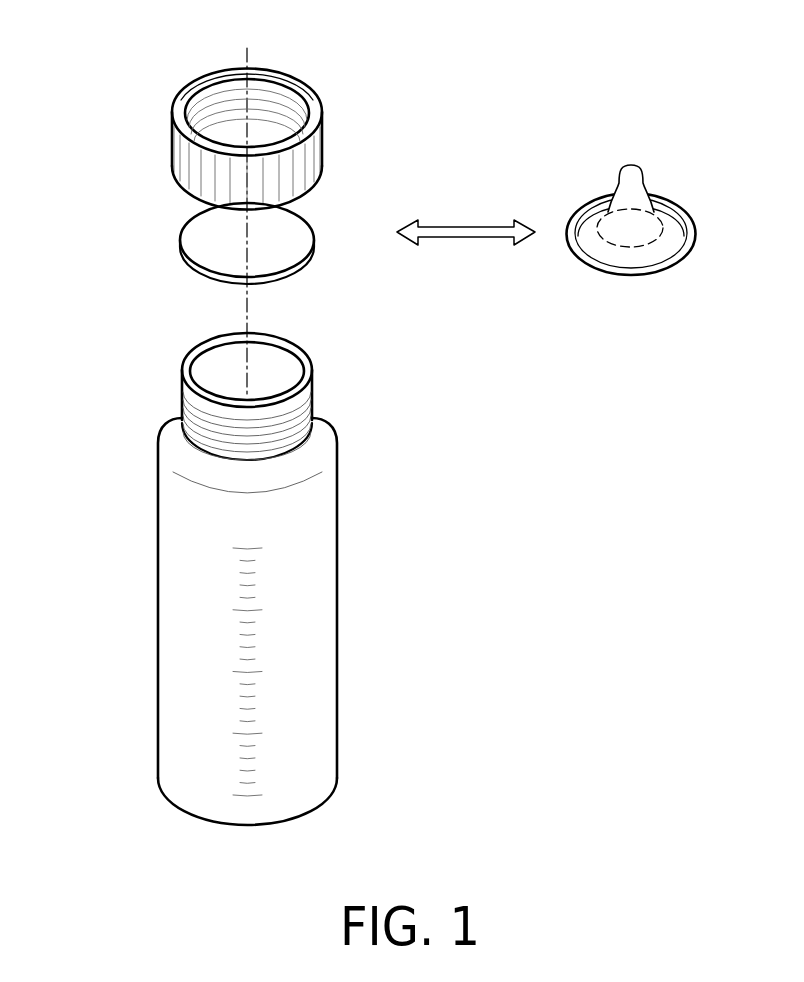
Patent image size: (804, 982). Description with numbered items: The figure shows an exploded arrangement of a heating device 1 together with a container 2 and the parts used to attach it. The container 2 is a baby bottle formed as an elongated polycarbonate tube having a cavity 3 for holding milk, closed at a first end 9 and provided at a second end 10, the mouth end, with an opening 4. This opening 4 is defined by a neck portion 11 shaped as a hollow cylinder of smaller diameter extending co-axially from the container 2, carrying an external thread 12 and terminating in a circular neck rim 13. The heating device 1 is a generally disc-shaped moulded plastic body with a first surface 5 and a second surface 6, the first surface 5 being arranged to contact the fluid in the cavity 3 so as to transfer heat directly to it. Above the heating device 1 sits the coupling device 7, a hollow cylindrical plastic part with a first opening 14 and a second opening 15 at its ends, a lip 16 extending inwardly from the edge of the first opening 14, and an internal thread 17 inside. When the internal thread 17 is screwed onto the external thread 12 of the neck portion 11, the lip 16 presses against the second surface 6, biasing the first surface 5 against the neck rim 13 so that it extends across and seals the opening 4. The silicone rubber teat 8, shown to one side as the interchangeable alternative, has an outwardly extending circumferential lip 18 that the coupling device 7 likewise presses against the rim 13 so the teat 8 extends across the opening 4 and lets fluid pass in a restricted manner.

The heating device 1 is at (315, 232).
The container 2 is at (338, 588).
The cavity 3 is at (312, 687).
The opening 4 is at (213, 360).
The first surface 5 is at (172, 263).
The second surface 6 is at (203, 238).
The coupling device 7 is at (320, 147).
The teat 8 is at (705, 200).
The first end 9 is at (182, 830).
The second end 10 is at (100, 578).
The neck portion 11 is at (167, 395).
The external thread 12 is at (300, 405).
The neck rim 13 is at (282, 345).
The first opening 14 is at (192, 72).
The second opening 15 is at (172, 198).
The lip 16 is at (303, 95).
The internal thread 17 is at (273, 103).
The circumferential lip 18 is at (575, 254).